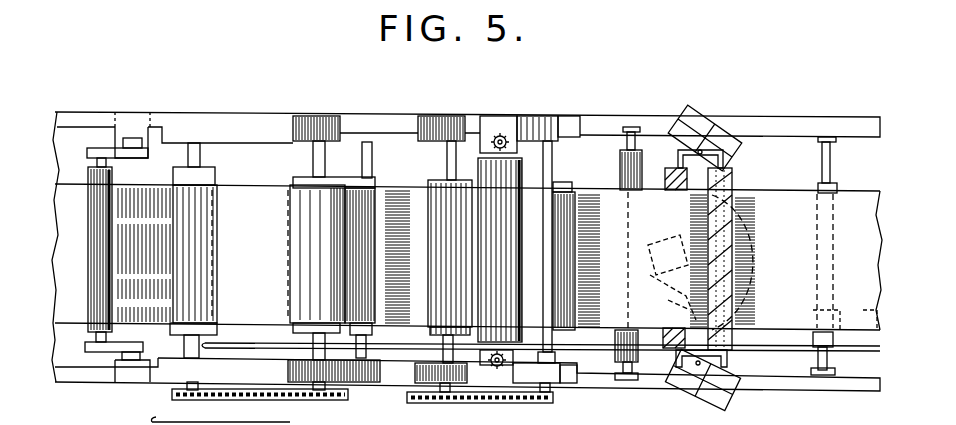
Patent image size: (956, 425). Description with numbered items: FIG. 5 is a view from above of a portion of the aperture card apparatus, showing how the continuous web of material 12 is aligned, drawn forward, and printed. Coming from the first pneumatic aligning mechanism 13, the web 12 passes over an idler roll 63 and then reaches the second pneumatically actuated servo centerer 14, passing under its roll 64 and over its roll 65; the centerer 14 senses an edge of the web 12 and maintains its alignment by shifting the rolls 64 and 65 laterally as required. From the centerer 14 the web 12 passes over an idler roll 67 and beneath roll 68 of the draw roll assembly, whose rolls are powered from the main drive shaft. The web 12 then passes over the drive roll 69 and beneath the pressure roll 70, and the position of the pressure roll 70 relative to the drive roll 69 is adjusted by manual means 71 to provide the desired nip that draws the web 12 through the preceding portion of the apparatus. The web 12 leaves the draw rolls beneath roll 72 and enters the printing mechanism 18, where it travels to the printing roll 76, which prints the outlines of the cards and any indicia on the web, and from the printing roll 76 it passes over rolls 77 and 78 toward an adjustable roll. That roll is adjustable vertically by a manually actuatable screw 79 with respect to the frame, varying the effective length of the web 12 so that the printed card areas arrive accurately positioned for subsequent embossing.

The web of material 12 is at (467, 247).
The pneumatic aligning mechanism 13 is at (700, 142).
The second pneumatic aligning mechanism 14 is at (690, 395).
The printing mechanism 18 is at (248, 122).
The idler roll 63 is at (830, 185).
The roll 64 is at (722, 178).
The roll 65 is at (668, 180).
The idler roll 67 is at (623, 167).
The roll 68 is at (570, 182).
The drive roll 69 is at (460, 403).
The pressure roll 70 is at (516, 252).
The manual means 71 is at (507, 140).
The roll 72 is at (447, 210).
The printing roll 76 is at (307, 180).
The roll 77 is at (385, 181).
The roll 78 is at (213, 176).
The manually actuatable screw 79 is at (104, 177).